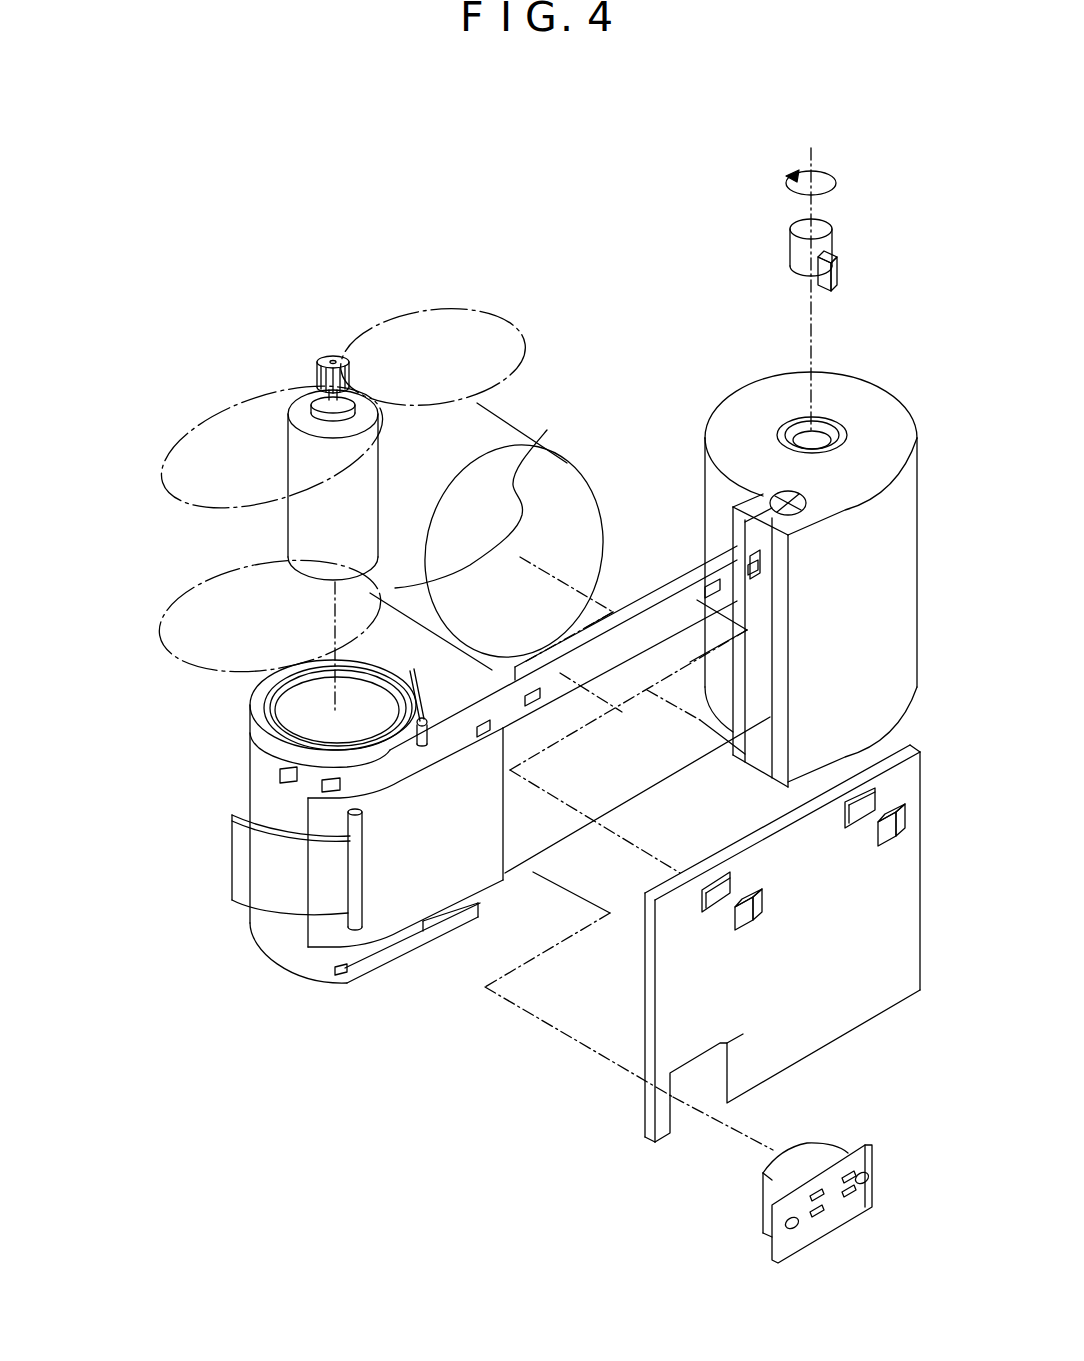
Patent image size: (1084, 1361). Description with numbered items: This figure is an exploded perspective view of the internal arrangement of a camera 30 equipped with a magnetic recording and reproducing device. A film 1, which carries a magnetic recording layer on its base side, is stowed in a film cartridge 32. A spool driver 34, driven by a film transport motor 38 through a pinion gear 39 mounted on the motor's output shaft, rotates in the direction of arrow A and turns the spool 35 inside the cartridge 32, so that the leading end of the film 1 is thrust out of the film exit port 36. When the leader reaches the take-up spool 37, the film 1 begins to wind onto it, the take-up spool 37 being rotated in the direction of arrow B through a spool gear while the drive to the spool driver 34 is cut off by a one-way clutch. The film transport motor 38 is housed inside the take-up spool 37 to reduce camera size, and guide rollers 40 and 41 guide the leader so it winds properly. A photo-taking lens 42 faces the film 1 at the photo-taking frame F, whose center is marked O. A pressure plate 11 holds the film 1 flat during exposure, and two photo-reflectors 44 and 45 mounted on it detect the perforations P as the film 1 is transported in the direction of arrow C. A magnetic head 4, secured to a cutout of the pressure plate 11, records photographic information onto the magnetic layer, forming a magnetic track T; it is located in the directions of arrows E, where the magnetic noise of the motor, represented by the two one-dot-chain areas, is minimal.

The film 1 is at (680, 605).
The magnetic head 4 is at (797, 1160).
The pressure plate 11 is at (855, 1013).
The camera 30 is at (257, 252).
The film cartridge 32 is at (893, 425).
The spool driver 34 is at (840, 246).
The spool 35 is at (822, 428).
The film exit port 36 is at (768, 690).
The take-up spool 37 is at (267, 723).
The film transport motor 38 is at (300, 453).
The pinion gear 39 is at (333, 357).
The guide roller 40 is at (350, 876).
The guide roller 41 is at (426, 716).
The photo-taking lens 42 is at (580, 480).
The photo-reflector 44 is at (757, 920).
The photo-reflector 45 is at (890, 848).